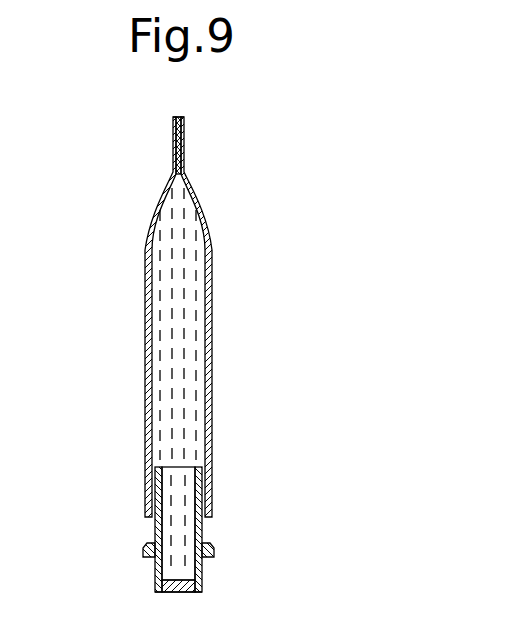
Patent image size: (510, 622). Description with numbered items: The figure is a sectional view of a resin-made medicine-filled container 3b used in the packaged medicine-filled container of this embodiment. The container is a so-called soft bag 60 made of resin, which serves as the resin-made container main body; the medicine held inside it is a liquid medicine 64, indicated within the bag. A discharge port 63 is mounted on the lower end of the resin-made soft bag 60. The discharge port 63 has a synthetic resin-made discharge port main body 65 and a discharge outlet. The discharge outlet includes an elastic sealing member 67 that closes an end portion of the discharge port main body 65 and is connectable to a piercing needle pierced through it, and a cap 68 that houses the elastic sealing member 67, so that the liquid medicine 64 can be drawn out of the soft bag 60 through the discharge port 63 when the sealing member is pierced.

The medicine-filled container 3b is at (334, 221).
The soft bag 60 is at (146, 313).
The discharge port 63 is at (219, 555).
The liquid medicine 64 is at (180, 350).
The discharge port main body 65 is at (155, 527).
The elastic sealing member 67 is at (178, 592).
The cap 68 is at (155, 573).